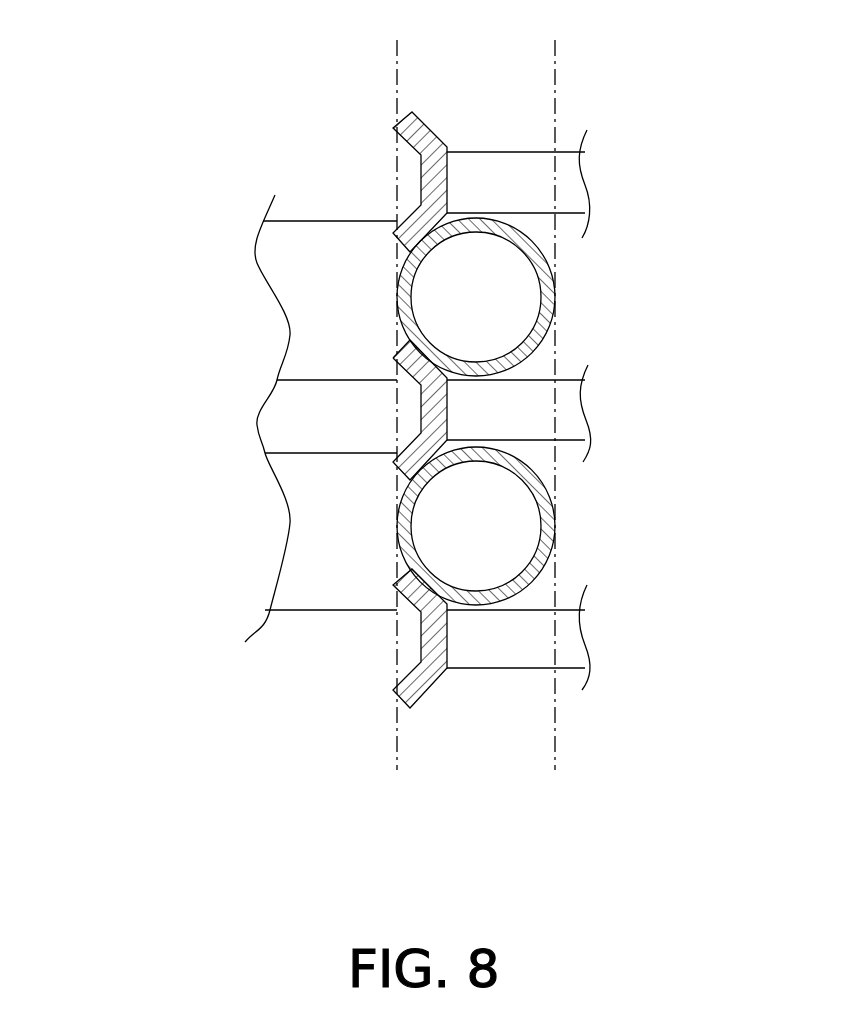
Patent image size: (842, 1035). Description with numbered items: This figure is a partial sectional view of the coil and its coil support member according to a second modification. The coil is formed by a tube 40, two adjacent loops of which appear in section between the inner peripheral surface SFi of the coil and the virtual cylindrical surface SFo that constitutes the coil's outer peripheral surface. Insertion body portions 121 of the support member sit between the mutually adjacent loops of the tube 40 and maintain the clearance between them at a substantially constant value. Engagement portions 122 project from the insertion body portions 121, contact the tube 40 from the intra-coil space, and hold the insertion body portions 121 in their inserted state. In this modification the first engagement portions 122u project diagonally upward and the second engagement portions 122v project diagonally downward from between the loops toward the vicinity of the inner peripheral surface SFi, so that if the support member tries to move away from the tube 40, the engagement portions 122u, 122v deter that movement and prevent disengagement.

The insertion body portion 121 is at (493, 402).
The engagement portion 122 is at (233, 496).
The first engagement portion 122u is at (407, 362).
The second engagement portion 122v is at (405, 467).
The tube 40 is at (395, 277).
The inner peripheral surface SFi is at (397, 80).
The virtual cylindrical surface SFo is at (555, 73).